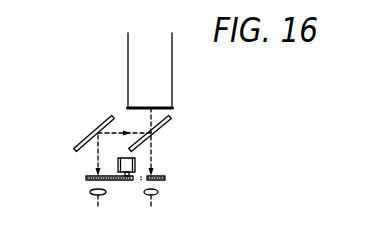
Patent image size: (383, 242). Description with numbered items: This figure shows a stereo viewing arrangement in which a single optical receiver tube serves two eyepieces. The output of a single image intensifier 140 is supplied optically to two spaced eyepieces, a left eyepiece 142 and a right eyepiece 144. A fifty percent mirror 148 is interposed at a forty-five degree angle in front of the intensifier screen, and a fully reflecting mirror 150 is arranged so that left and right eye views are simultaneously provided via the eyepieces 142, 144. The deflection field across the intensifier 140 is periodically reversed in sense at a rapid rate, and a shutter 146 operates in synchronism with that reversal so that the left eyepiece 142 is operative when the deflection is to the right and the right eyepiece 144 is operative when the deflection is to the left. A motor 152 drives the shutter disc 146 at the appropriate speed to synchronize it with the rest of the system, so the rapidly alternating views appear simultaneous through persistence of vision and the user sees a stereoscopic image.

The image intensifier 140 is at (172, 77).
The left eyepiece 142 is at (94, 197).
The right eyepiece 144 is at (157, 194).
The shutter 146 is at (158, 176).
The 50% mirror 148 is at (169, 121).
The fully reflecting mirror 150 is at (89, 136).
The motor 152 is at (117, 163).